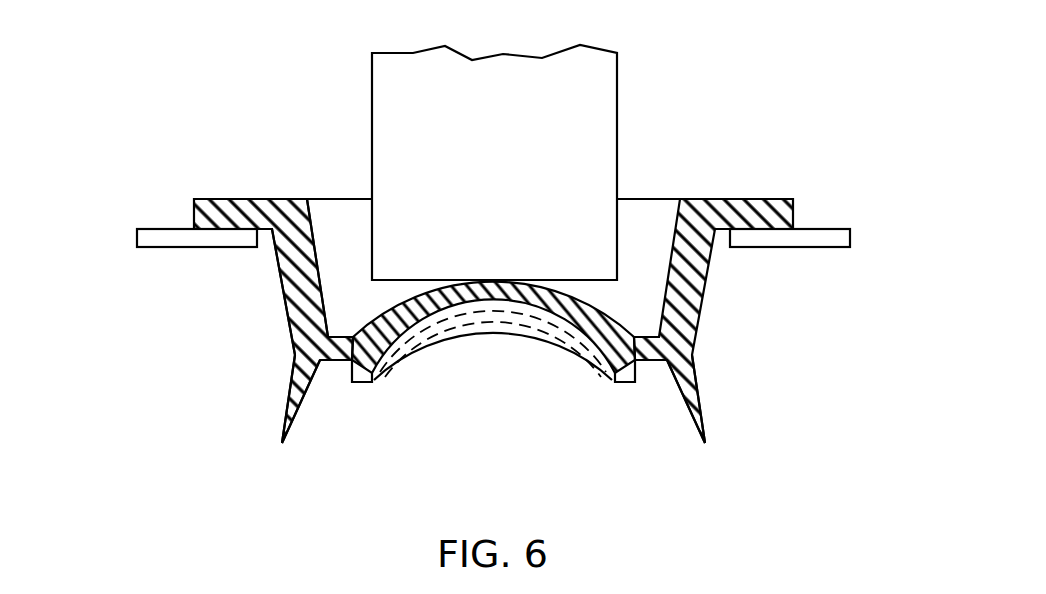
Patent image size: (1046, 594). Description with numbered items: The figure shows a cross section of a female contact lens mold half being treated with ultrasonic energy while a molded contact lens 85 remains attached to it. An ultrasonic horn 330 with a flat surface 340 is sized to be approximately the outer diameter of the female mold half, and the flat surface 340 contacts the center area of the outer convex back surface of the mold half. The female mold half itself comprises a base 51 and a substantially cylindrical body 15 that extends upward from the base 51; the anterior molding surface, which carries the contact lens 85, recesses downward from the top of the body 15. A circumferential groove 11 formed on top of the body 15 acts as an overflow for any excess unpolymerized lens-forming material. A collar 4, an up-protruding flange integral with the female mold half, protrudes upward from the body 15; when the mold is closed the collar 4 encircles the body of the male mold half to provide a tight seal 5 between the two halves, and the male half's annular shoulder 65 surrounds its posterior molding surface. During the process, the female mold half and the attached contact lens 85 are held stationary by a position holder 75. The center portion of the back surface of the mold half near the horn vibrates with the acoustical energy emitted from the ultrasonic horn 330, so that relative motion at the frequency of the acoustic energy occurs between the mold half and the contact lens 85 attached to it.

The ultrasonic horn 330 is at (617, 82).
The flat surface 340 is at (627, 280).
The base 51 is at (223, 198).
The position holder 75 is at (150, 237).
The substantially cylindrical body 15 is at (279, 275).
The circumferential groove 11 is at (337, 361).
The collar 4 is at (290, 402).
The tight seal 5 is at (663, 355).
The annular shoulder 65 is at (643, 360).
The contact lens 85 is at (541, 338).